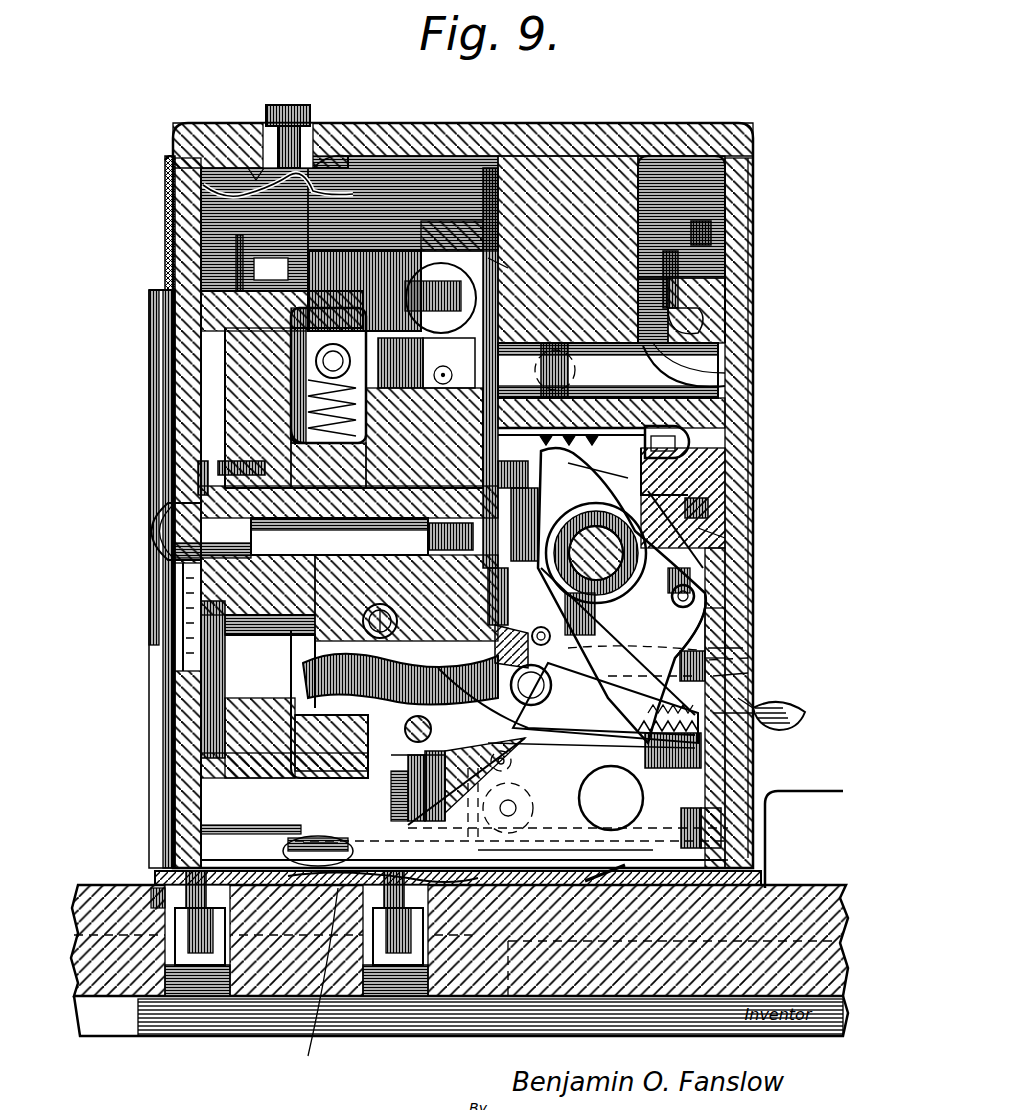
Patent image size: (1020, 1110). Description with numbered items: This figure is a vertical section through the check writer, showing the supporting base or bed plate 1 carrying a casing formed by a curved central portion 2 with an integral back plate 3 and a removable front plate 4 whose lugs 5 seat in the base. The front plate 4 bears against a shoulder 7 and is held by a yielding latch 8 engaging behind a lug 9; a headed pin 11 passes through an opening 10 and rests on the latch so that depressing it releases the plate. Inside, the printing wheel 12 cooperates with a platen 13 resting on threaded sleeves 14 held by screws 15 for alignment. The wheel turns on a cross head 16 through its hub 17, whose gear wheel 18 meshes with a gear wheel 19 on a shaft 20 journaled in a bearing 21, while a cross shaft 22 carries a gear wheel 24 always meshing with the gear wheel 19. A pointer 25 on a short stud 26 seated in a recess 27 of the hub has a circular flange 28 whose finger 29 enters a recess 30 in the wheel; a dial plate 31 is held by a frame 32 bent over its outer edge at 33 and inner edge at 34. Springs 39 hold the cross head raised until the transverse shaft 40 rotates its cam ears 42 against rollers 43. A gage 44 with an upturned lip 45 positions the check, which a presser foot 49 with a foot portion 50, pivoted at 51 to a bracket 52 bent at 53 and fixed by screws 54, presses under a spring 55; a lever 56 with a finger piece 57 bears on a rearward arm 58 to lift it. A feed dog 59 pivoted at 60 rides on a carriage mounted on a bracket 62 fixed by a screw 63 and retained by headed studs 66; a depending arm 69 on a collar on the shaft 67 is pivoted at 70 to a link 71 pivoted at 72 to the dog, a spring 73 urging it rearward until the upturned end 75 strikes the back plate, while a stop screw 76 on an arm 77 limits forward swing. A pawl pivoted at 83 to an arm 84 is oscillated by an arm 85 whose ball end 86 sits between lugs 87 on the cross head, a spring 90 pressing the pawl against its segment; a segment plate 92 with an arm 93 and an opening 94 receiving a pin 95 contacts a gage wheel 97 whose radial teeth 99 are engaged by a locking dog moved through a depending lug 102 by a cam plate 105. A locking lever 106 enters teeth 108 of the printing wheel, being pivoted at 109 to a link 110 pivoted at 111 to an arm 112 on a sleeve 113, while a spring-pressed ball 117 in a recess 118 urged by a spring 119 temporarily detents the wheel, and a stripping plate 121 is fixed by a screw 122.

The supporting base 1 is at (461, 1016).
The curved central portion 2 is at (425, 148).
The back plate 3 is at (763, 513).
The removable front plate 4 is at (180, 695).
The downwardly extending lugs 5 is at (463, 849).
The shoulder 7 is at (248, 150).
The yielding latch 8 is at (342, 150).
The lug 9 is at (242, 160).
The opening 10 is at (312, 148).
The headed pin 11 is at (280, 130).
The printing wheel 12 is at (250, 298).
The platen 13 is at (510, 596).
The threaded sleeves 14 is at (210, 915).
The screws 15 is at (178, 935).
The cross head 16 is at (400, 392).
The hub 17 is at (349, 563).
The gear wheel 18 is at (185, 870).
The gear wheel 19 is at (538, 369).
The shaft 20 is at (665, 368).
The bearing 21 is at (560, 195).
The cross shaft 22 is at (608, 370).
The gear wheel 24 is at (649, 249).
The pointer 25 is at (150, 421).
The short stud 26 is at (165, 518).
The recess 27 is at (362, 536).
The circular flange 28 is at (190, 535).
The finger 29 is at (215, 462).
The recess 30 is at (230, 487).
The circular dial plate 31 is at (125, 219).
The frame 32 is at (158, 172).
The bent outer edge 33 is at (175, 150).
The bent inner edge 34 is at (160, 298).
The springs 39 is at (400, 790).
The transverse shaft 40 is at (450, 265).
The cam ears 42 is at (364, 291).
The rollers 43 is at (480, 255).
The gage 44 is at (819, 859).
The upturned lip 45 is at (250, 830).
The presser foot 49 is at (300, 832).
The foot portion 50 is at (311, 984).
The pivot 51 is at (611, 798).
The bracket 52 is at (705, 625).
The right-angled portion 53 is at (745, 698).
The screws 54 is at (705, 728).
The spring 55 is at (745, 708).
The lever 56 is at (735, 640).
The finger piece 57 is at (790, 700).
The rearwardly projecting arm 58 is at (745, 665).
The feed dog 59 is at (472, 872).
The pivot 60 is at (565, 857).
The bracket 62 is at (210, 818).
The screw 63 is at (470, 788).
The headed studs 66 is at (532, 858).
The shaft 67 is at (692, 525).
The depending arm 69 is at (745, 650).
The pivot 70 is at (745, 770).
The link 71 is at (566, 708).
The pivot 72 is at (511, 692).
The spring 73 is at (559, 564).
The upturned rear end 75 is at (760, 800).
The adjustable stop screw 76 is at (420, 776).
The upwardly extending arm 77 is at (430, 715).
The pivot 83 is at (400, 679).
The arm 84 is at (622, 595).
The laterally projecting arm 85 is at (598, 464).
The ball shaped end 86 is at (593, 442).
The spaced lugs 87 is at (518, 498).
The spring 90 is at (407, 621).
The segment plate 92 is at (638, 545).
The upwardly extending arm 93 is at (649, 471).
The opening 94 is at (687, 585).
The pin 95 is at (700, 600).
The gage wheel 97 is at (705, 290).
The radial teeth 99 is at (693, 237).
The depending lug 102 is at (508, 633).
The cam plate 105 is at (328, 375).
The locking lever 106 is at (300, 656).
The spaced teeth 108 is at (270, 696).
The pivot 109 is at (494, 704).
The link 110 is at (605, 703).
The pivot 111 is at (725, 675).
The arm 112 is at (633, 653).
The sleeve 113 is at (671, 529).
The spring pressed ball 117 is at (308, 353).
The recess 118 is at (290, 378).
The spring 119 is at (300, 405).
The yielding plate 121 is at (210, 858).
The screw 122 is at (713, 820).